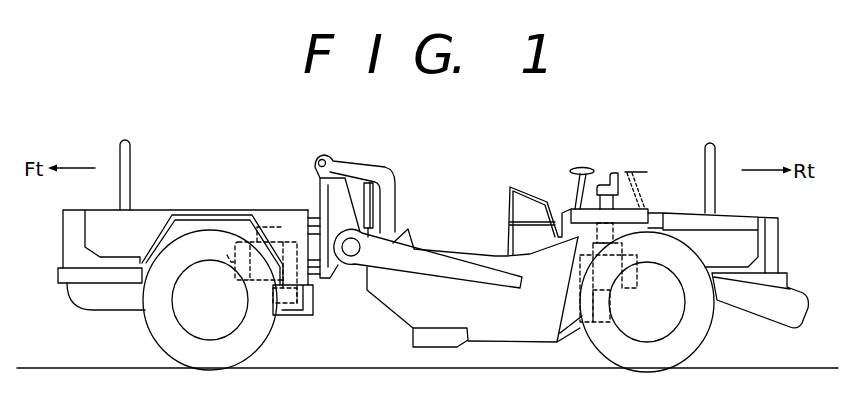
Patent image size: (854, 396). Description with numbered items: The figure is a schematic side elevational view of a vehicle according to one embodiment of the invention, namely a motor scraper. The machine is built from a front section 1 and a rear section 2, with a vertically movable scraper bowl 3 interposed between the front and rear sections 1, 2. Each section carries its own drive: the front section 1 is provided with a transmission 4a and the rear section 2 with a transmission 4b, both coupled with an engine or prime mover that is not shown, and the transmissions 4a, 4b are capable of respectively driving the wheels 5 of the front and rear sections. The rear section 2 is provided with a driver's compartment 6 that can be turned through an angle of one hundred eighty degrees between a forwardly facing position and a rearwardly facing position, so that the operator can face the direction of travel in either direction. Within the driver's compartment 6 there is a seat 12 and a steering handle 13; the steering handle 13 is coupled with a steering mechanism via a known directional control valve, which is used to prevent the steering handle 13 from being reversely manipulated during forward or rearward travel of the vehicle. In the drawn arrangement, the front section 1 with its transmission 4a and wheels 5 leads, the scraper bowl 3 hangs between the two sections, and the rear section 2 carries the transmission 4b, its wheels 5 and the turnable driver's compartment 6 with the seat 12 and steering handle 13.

The front section 1 is at (182, 208).
The rear section 2 is at (745, 211).
The scraper bowl 3 is at (512, 323).
The transmission 4a is at (285, 240).
The transmission 4b is at (647, 276).
The wheels 5 is at (257, 333).
The driver's compartment 6 is at (625, 217).
The seat 12 is at (620, 173).
The steering handle 13 is at (571, 168).